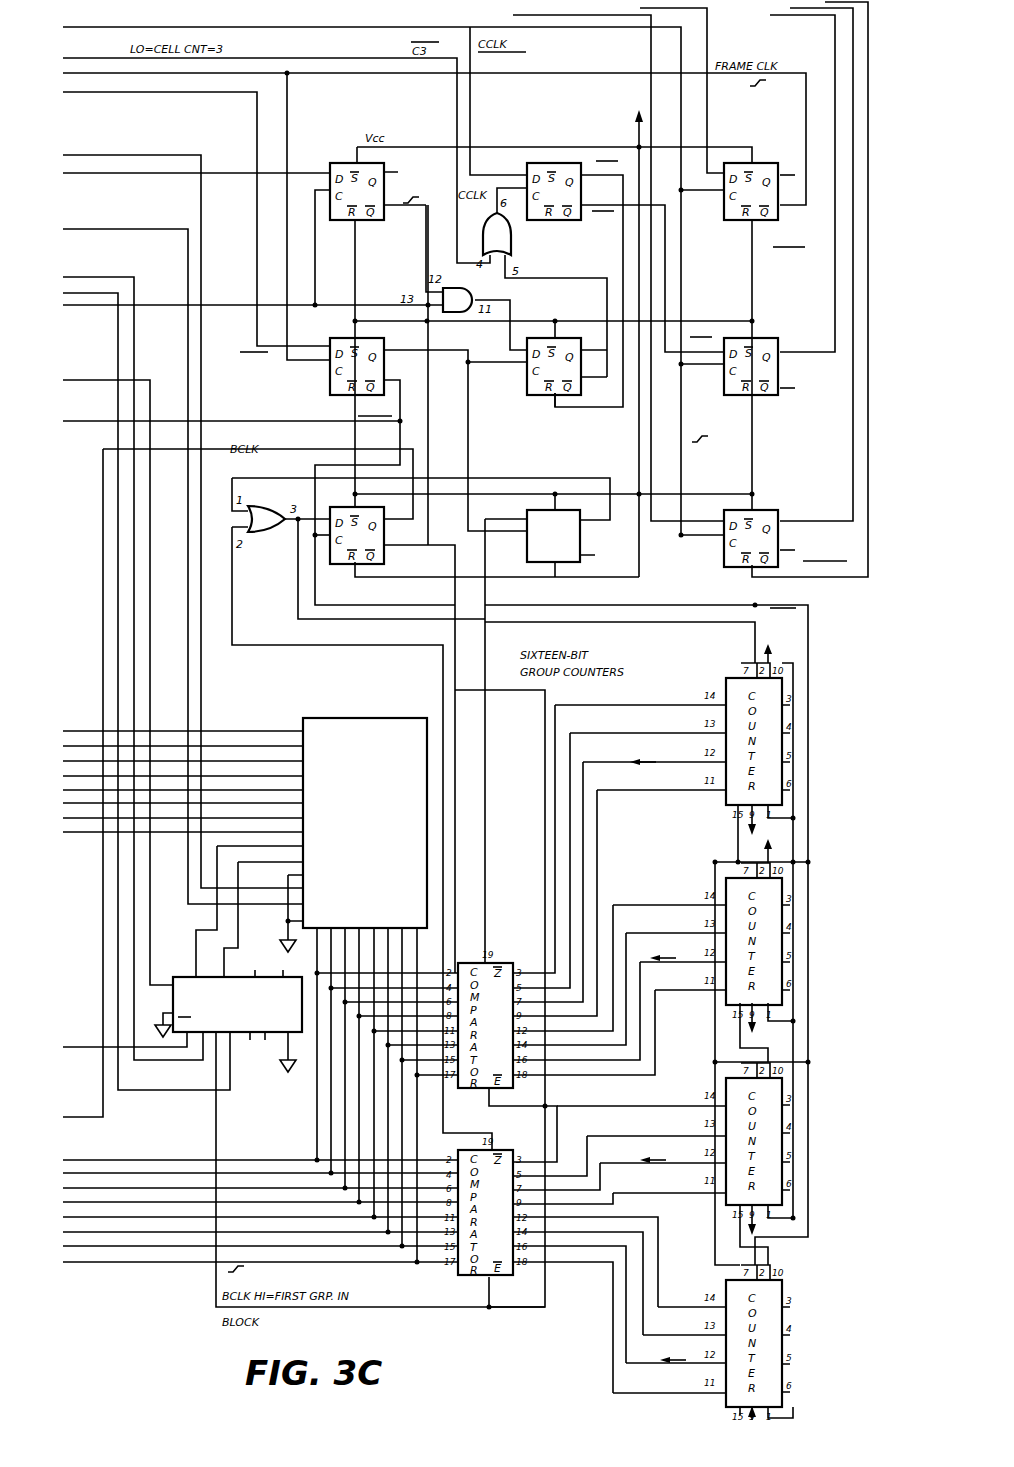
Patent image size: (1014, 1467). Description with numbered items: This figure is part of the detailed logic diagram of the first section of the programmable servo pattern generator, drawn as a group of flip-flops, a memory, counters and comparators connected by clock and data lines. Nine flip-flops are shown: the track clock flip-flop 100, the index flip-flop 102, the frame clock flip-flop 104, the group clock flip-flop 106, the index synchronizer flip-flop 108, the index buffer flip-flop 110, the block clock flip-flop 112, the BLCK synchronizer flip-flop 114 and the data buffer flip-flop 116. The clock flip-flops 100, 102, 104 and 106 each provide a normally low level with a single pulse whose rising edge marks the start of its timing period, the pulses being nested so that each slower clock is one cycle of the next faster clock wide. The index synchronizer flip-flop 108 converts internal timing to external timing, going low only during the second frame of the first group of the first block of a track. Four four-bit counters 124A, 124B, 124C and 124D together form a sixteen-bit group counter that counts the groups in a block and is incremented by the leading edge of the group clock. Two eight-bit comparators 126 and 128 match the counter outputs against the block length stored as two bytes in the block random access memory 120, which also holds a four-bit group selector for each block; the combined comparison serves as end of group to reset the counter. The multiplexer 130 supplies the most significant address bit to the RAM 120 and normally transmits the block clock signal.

The track clock flip-flop 100 is at (335, 163).
The index flip-flop 102 is at (532, 163).
The frame clock flip-flop 104 is at (740, 163).
The group clock flip-flop 106 is at (330, 388).
The index synchronizer flip-flop 108 is at (527, 388).
The index buffer flip-flop 110 is at (740, 392).
The block clock flip-flop 112 is at (346, 562).
The BLCK synchronizer flip-flop 114 is at (540, 562).
The data buffer flip-flop 116 is at (735, 565).
The block random access memory 120 is at (355, 698).
The 4-bit counter 124A is at (782, 686).
The 4-bit counter 124B is at (782, 916).
The 4-bit counter 124C is at (782, 1090).
The 4-bit counter 124D is at (782, 1287).
The 8-bit comparator 126 is at (508, 962).
The 8-bit comparator 128 is at (503, 1280).
The multiplexer 130 is at (237, 1032).